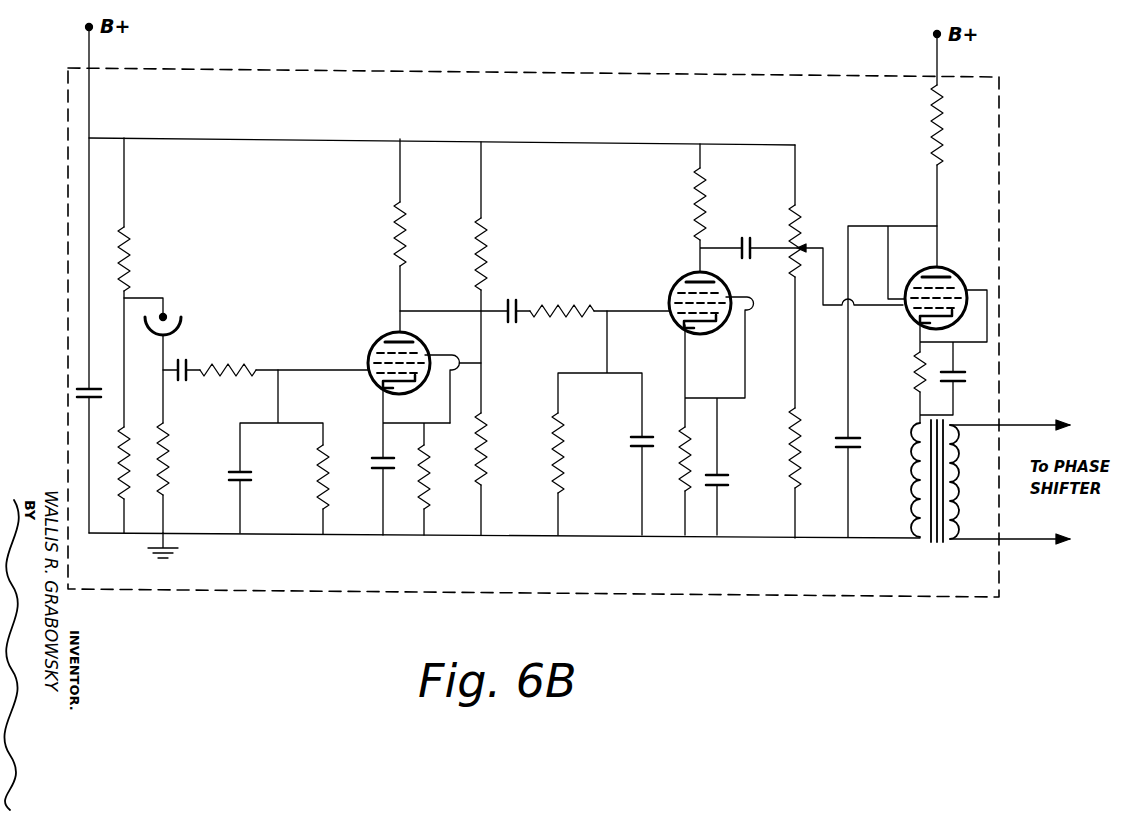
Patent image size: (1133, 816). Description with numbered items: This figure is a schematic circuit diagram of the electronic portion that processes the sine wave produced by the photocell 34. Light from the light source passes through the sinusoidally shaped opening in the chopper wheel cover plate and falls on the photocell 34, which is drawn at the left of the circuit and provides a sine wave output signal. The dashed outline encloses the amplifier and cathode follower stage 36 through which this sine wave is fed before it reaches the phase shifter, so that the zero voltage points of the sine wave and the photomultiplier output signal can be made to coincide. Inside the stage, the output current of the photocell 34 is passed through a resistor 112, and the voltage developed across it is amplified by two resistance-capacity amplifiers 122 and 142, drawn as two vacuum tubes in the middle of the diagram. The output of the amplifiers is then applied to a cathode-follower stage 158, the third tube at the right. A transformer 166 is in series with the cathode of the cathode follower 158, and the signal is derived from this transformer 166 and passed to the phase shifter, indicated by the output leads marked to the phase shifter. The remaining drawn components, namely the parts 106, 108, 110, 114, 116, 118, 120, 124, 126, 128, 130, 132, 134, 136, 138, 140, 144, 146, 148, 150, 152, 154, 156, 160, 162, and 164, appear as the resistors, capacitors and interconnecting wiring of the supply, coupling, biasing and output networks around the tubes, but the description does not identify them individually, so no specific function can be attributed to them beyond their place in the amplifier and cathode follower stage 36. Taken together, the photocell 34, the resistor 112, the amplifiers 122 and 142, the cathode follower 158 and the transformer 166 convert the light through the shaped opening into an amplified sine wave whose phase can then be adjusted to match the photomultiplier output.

The photocell 34 is at (163, 317).
The amplifier and cathode follower stage 36 is at (727, 596).
The capacitor 106 is at (73, 397).
The resistor 108 is at (132, 266).
The resistor 110 is at (127, 443).
The resistor 112 is at (166, 448).
The capacitor 114 is at (187, 356).
The resistor 116 is at (233, 363).
The capacitor 118 is at (248, 483).
The resistor 120 is at (328, 481).
The resistance-capacity amplifier 122 is at (369, 331).
The capacitor 124 is at (380, 458).
The resistor 126 is at (429, 486).
The resistor 128 is at (405, 240).
The resistor 130 is at (486, 250).
The resistor 132 is at (485, 482).
The capacitor 134 is at (516, 297).
The resistor 136 is at (577, 303).
The resistor 138 is at (563, 471).
The capacitor 140 is at (632, 457).
The resistance-capacity amplifier 142 is at (776, 291).
The resistor 144 is at (712, 186).
The capacitor 146 is at (756, 214).
The resistor 148 is at (680, 438).
The capacitor 150 is at (722, 474).
The potentiometer 152 is at (800, 210).
The resistor 154 is at (798, 422).
The capacitor 156 is at (838, 456).
The cathode-follower stage 158 is at (895, 342).
The resistor 160 is at (932, 117).
The resistor 162 is at (915, 369).
The capacitor 164 is at (956, 377).
The transformer 166 is at (910, 475).